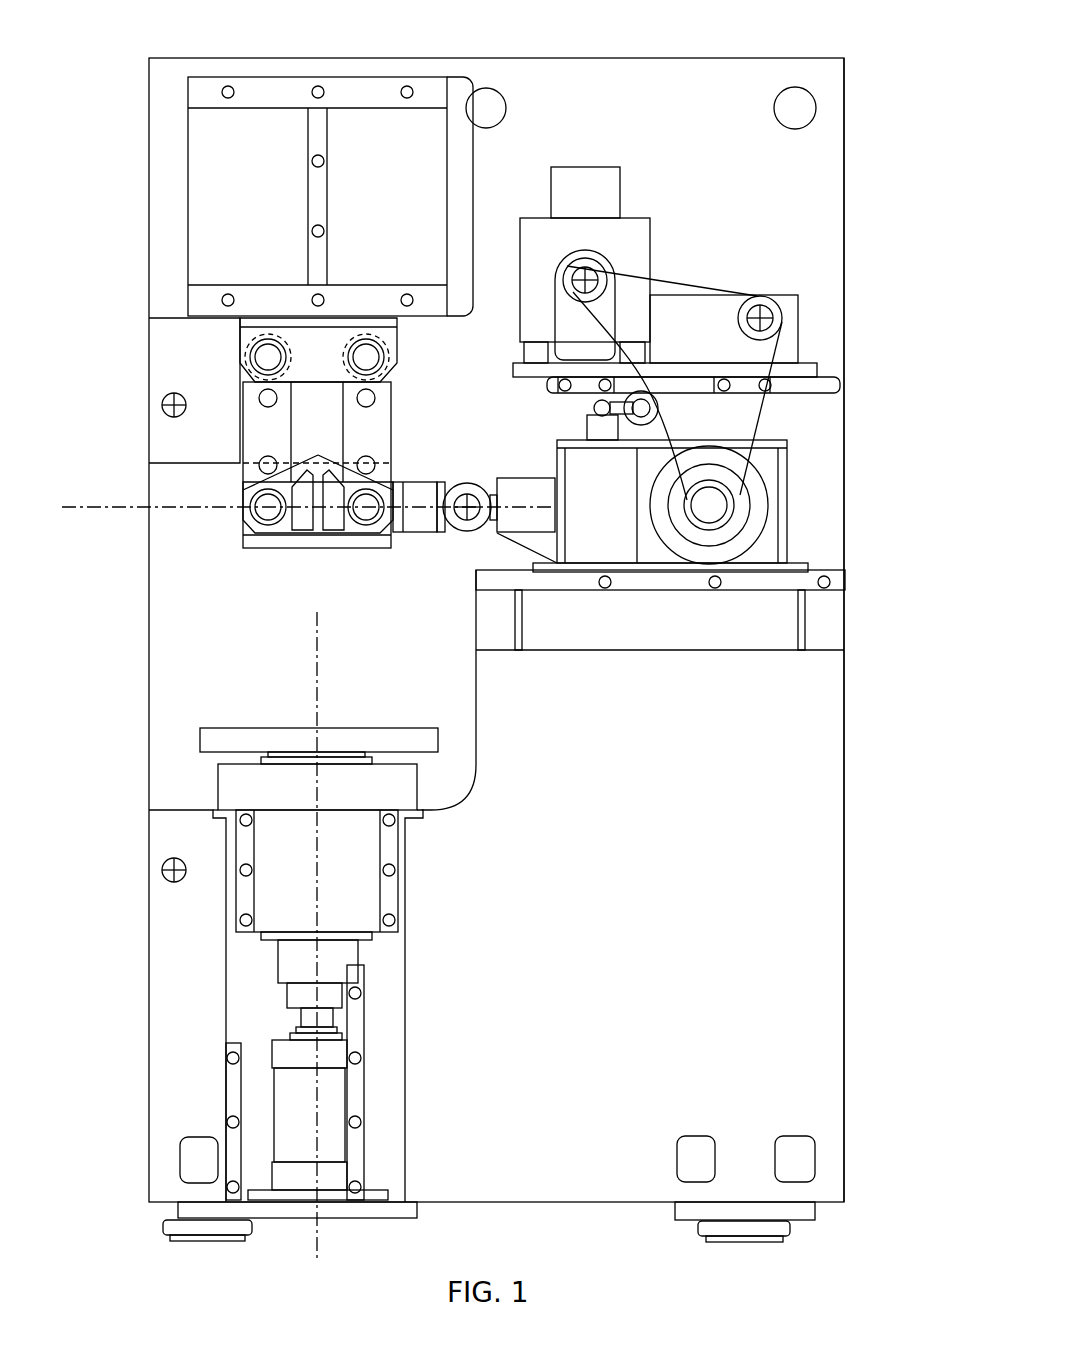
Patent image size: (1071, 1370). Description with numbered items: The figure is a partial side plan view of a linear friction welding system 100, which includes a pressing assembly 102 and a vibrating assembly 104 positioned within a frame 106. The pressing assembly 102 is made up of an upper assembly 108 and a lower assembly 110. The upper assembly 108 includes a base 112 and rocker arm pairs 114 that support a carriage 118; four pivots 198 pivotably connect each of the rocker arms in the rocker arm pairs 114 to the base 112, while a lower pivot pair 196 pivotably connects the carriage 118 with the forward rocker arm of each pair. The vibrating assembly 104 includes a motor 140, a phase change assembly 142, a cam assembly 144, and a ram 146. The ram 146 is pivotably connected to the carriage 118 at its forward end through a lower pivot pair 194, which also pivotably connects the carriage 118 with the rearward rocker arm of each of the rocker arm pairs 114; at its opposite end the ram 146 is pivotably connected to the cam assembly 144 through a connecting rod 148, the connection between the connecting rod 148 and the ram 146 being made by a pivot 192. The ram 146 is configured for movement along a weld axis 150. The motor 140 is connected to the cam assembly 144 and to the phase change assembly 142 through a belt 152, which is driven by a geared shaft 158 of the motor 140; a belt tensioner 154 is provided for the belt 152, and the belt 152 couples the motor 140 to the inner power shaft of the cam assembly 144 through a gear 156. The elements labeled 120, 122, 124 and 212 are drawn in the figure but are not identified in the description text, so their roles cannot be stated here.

The linear friction welding system 100 is at (76, 77).
The pressing assembly 102 is at (113, 936).
The vibrating assembly 104 is at (864, 437).
The frame 106 is at (845, 278).
The upper assembly 108 is at (525, 141).
The lower assembly 110 is at (434, 1004).
The base 112 is at (188, 254).
The rocker arm pair 114 is at (243, 432).
The carriage 118 is at (243, 538).
The disc 120 is at (247, 727).
The guide rail 122 is at (365, 1097).
The vertical axis 124 is at (317, 697).
The motor 140 is at (652, 218).
The phase change assembly 142 is at (798, 326).
The cam assembly 144 is at (787, 500).
The ram 146 is at (427, 482).
The connecting rod 148 is at (518, 478).
The weld axis 150 is at (125, 507).
The belt 152 is at (700, 287).
The belt tensioner 154 is at (635, 425).
The gear 156 is at (710, 530).
The geared shaft 158 is at (565, 268).
The pivot 192 is at (468, 531).
The lower pivot pair 194 is at (356, 527).
The lower pivot pair 196 is at (243, 515).
The pivots 198 is at (358, 345).
The idler pulley 212 is at (762, 297).